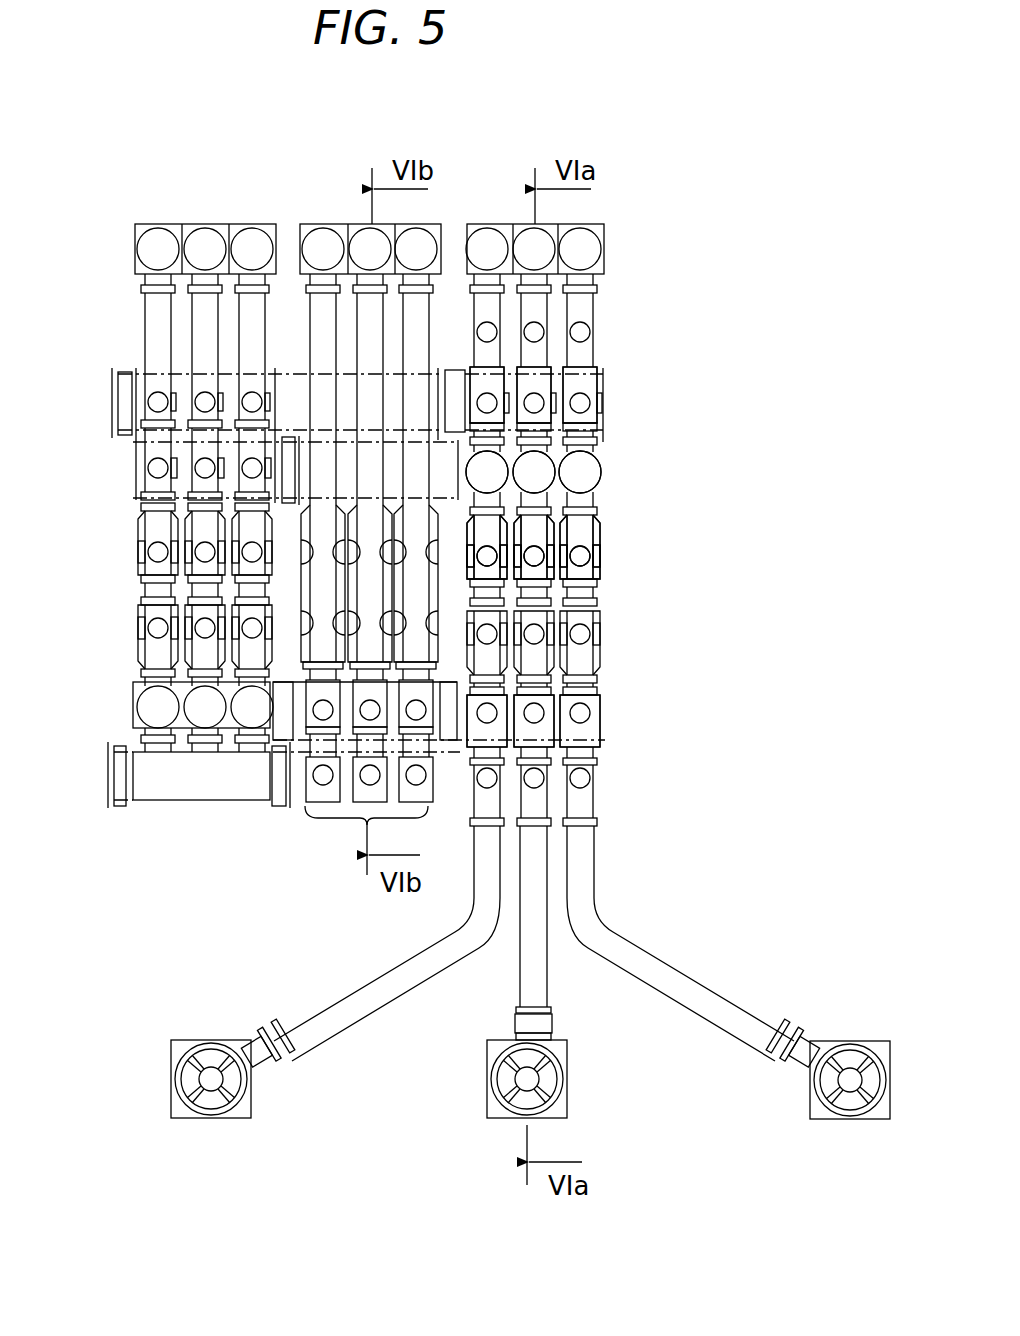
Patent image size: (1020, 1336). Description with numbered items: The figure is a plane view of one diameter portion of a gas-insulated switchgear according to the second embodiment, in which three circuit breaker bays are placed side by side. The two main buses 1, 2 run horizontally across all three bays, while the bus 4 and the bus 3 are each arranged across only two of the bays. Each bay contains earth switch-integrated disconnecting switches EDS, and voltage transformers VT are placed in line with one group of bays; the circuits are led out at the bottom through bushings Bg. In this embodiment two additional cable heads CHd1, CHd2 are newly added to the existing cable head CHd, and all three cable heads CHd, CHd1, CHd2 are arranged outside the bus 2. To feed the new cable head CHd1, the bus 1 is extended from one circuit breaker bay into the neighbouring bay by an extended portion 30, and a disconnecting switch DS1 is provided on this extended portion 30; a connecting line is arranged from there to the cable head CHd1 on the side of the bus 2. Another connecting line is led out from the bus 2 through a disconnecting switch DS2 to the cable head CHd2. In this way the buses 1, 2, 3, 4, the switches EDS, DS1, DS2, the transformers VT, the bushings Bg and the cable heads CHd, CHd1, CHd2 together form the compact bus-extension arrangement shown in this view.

The bus 1 is at (108, 768).
The bus 2 is at (110, 392).
The bus 3 is at (604, 713).
The bus 4 is at (133, 466).
The extended portion 30 is at (346, 822).
The cable head CHd is at (178, 224).
The cable head CHd1 is at (436, 224).
The cable head CHd2 is at (605, 222).
The disconnecting switch DS1 is at (284, 806).
The disconnecting switch DS2 is at (580, 378).
The voltage transformer VT is at (603, 470).
The earth switch-integrated disconnecting switch EDS is at (603, 540).
The bushing Bg is at (568, 1073).